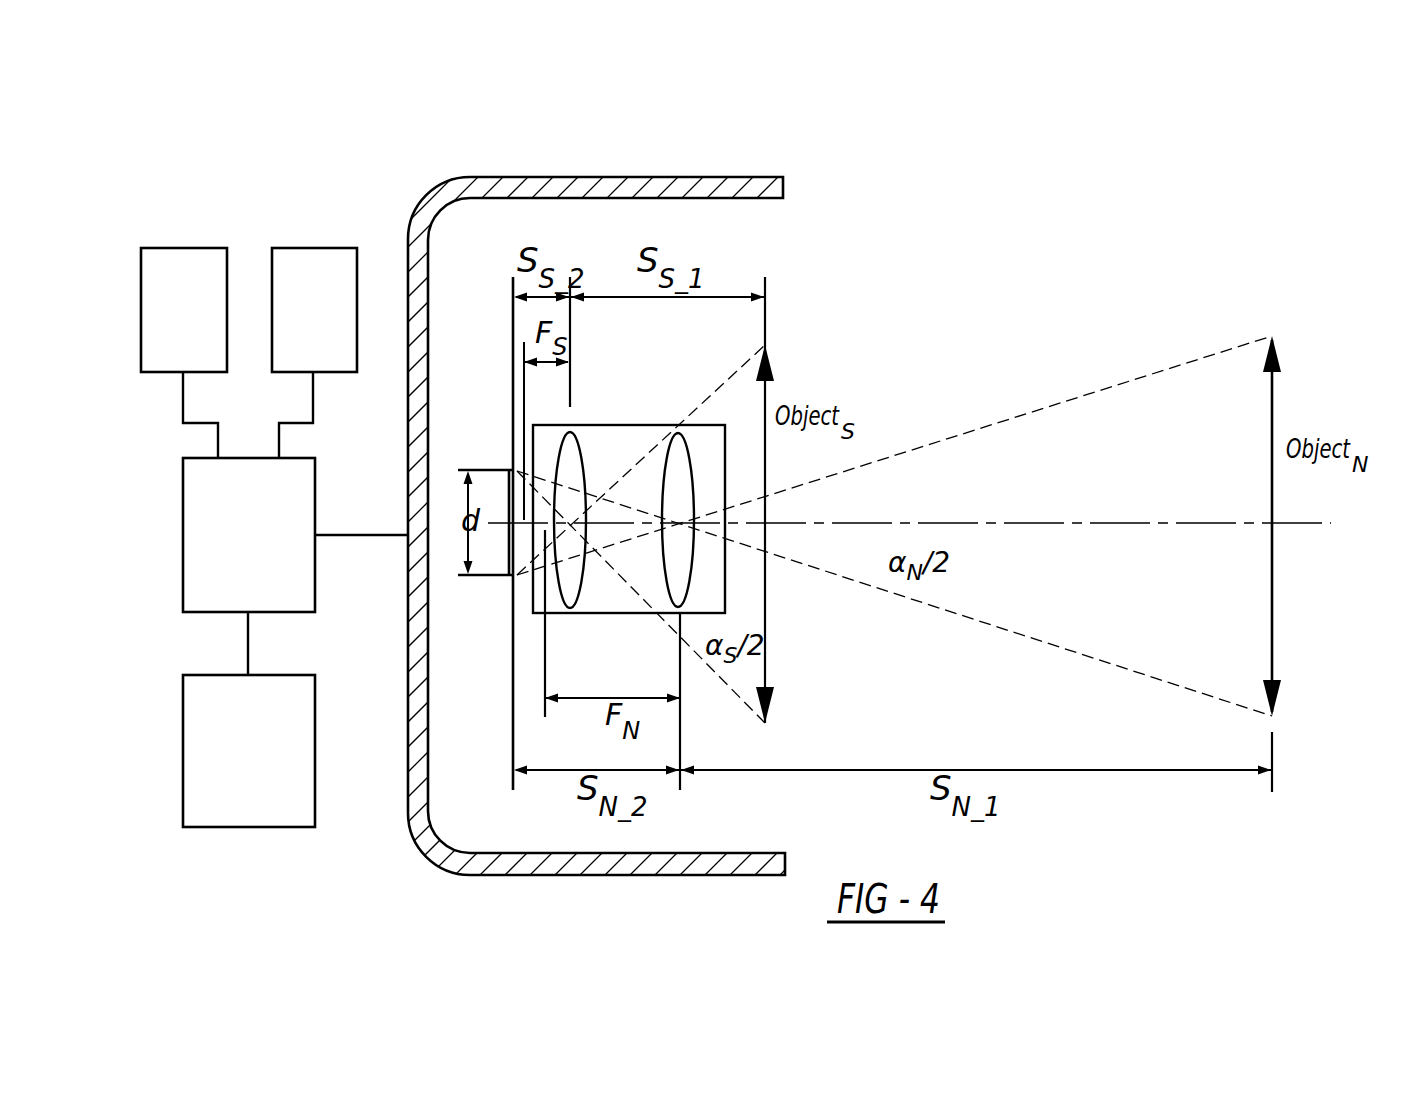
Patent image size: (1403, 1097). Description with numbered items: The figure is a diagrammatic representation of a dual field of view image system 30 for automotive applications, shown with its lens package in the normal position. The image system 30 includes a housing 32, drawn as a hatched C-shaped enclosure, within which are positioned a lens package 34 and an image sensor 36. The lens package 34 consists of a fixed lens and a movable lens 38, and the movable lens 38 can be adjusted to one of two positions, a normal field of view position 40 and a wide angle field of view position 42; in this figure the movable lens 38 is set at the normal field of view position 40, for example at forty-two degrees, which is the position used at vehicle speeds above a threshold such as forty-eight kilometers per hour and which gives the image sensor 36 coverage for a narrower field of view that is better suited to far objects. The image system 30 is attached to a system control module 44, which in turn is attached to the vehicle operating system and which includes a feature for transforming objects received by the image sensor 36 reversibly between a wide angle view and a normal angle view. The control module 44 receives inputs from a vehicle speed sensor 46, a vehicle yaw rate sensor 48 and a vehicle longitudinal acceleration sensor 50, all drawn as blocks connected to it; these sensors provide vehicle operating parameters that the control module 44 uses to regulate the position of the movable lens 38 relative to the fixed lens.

The image system 30 is at (627, 150).
The housing 32 is at (725, 190).
The lens package 34 is at (618, 447).
The image sensor 36 is at (512, 545).
The movable lens 38 is at (566, 583).
The normal field of view position 40 is at (677, 455).
The wide angle field of view position 42 is at (567, 452).
The system control module 44 is at (295, 566).
The vehicle speed sensor 46 is at (184, 353).
The vehicle yaw rate sensor 48 is at (314, 353).
The vehicle longitudinal acceleration sensor 50 is at (249, 751).